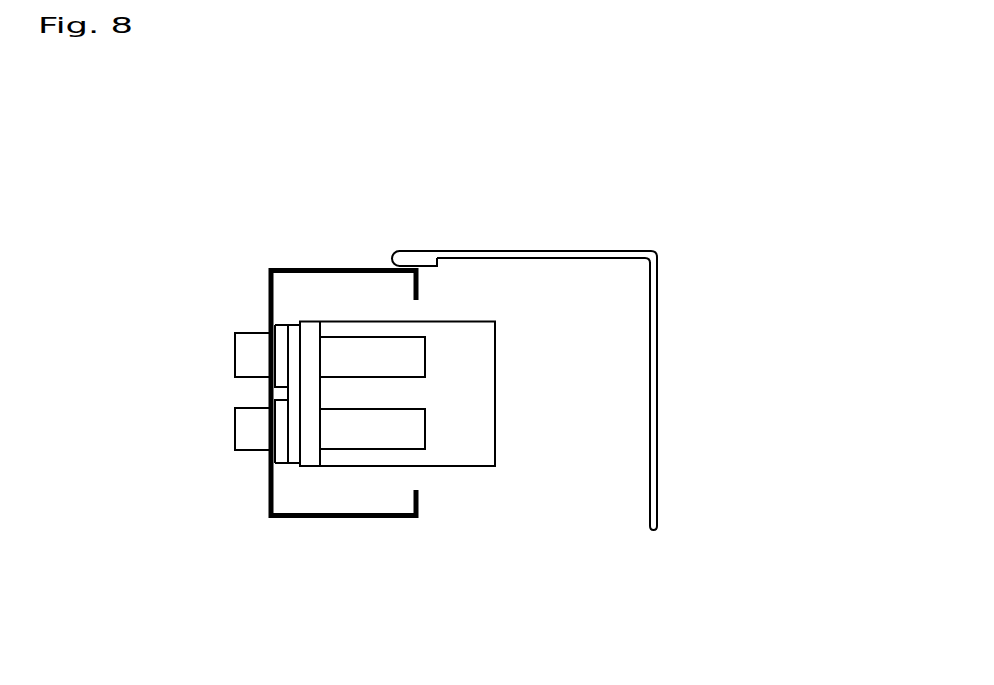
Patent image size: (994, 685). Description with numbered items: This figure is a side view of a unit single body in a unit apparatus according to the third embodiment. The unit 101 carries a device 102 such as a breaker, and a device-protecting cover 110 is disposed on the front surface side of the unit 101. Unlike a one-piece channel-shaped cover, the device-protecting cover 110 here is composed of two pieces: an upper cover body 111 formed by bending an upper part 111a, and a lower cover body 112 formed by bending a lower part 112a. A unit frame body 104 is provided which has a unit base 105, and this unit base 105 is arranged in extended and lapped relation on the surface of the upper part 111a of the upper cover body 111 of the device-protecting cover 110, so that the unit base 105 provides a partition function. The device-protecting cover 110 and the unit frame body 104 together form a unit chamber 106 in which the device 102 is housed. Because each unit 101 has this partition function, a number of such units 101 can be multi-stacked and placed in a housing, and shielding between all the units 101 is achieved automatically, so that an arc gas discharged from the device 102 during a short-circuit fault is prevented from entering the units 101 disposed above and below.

The unit 101 is at (235, 355).
The device 102 is at (360, 467).
The unit frame body 104 is at (630, 250).
The unit base 105 is at (458, 250).
The unit chamber 106 is at (658, 398).
The device-protecting cover 110 is at (268, 292).
The upper cover body 111 is at (295, 267).
The upper part 111a is at (353, 268).
The lower cover body 112 is at (268, 482).
The lower part 112a is at (325, 520).